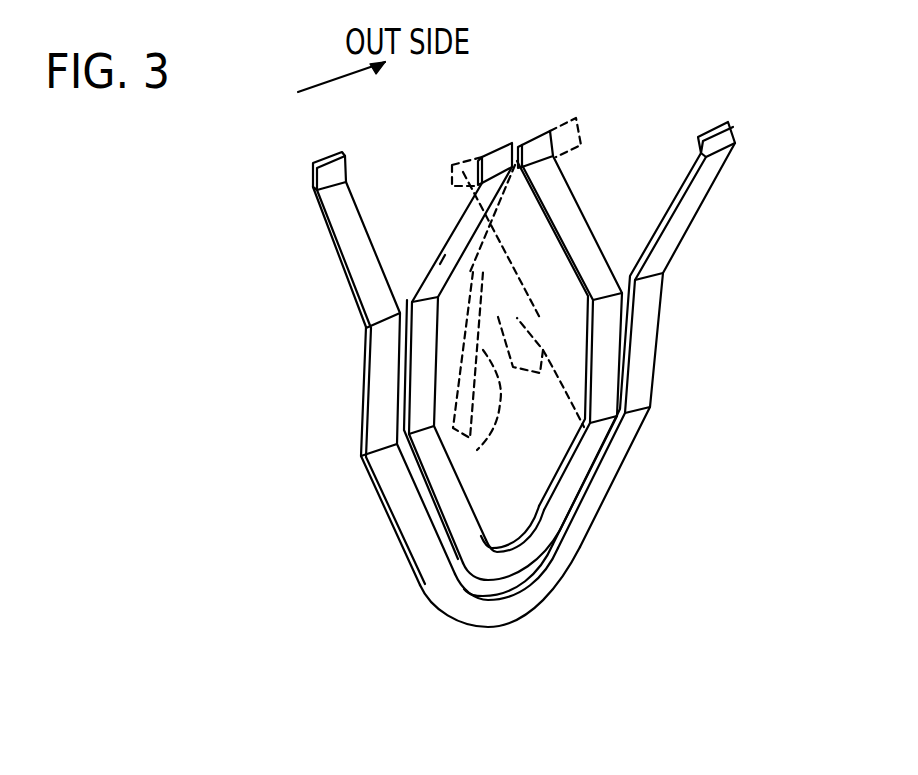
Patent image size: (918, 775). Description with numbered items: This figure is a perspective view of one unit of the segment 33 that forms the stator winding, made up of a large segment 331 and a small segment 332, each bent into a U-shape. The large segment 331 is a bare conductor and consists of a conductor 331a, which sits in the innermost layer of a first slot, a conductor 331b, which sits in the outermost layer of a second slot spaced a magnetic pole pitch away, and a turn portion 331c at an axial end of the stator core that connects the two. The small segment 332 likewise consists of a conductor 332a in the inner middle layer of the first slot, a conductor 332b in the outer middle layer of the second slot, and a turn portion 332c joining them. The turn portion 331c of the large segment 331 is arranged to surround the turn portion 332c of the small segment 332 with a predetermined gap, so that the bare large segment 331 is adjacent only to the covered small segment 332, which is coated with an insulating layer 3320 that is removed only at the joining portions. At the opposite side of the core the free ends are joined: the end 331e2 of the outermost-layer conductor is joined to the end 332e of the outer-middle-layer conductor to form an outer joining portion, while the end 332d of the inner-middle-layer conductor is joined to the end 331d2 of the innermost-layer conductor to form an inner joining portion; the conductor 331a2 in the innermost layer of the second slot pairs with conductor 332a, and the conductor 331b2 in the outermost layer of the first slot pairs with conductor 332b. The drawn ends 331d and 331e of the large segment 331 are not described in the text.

The segment 33 is at (410, 587).
The large segment 331 is at (690, 237).
The conductor 331a is at (385, 364).
The conductor 331a2 is at (612, 448).
The conductor 331b is at (658, 350).
The conductor 331b2 is at (487, 440).
The turn portion 331c is at (473, 610).
The left end tab of outer clip 331d is at (327, 172).
The end 331d2 is at (448, 180).
The right end tab of outer clip 331e is at (720, 142).
The end 331e2 is at (560, 142).
The small segment 332 is at (608, 247).
The conductor 332a is at (417, 398).
The conductor 332b is at (600, 397).
The turn portion 332c is at (497, 567).
The end 332d is at (497, 150).
The end 332e is at (540, 140).
The insulating layer 3320 is at (442, 262).